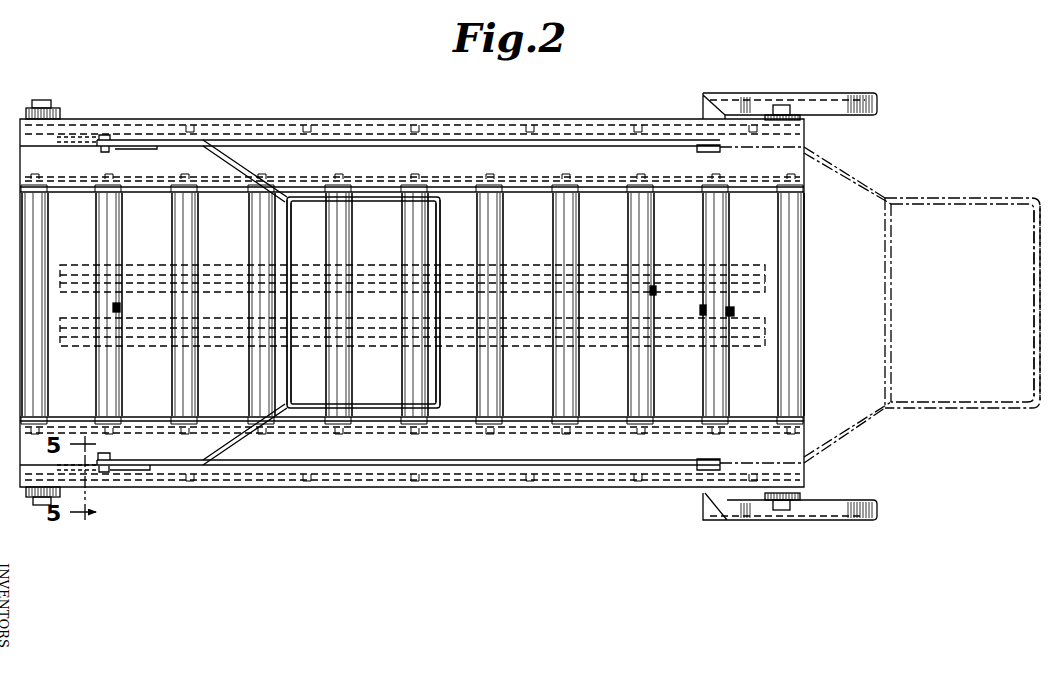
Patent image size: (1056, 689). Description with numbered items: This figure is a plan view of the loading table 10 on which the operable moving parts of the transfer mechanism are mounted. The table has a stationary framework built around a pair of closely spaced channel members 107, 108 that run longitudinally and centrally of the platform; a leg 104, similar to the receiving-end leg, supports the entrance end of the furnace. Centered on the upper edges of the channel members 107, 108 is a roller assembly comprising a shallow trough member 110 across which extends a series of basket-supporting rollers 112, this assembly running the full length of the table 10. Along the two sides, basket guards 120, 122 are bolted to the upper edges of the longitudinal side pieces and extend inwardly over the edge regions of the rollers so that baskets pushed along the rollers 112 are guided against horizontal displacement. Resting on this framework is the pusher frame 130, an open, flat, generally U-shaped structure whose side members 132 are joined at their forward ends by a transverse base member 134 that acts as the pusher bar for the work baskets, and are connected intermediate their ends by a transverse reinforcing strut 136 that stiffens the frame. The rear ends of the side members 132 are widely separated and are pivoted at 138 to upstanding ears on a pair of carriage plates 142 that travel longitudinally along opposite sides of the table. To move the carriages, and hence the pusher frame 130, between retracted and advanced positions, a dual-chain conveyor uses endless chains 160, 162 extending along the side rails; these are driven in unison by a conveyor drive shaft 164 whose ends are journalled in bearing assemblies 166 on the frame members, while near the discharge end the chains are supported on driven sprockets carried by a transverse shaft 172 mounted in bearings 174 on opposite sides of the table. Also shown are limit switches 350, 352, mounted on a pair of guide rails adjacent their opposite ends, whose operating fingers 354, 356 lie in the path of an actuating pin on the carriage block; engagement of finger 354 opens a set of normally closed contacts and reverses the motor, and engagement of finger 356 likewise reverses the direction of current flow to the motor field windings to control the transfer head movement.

The loading table 10 is at (324, 108).
The leg 104 is at (787, 92).
The channel member 107 is at (520, 268).
The channel member 108 is at (508, 346).
The shallow trough member 110 is at (453, 180).
The basket-supporting rollers 112 is at (172, 397).
The basket guard 120 is at (548, 157).
The basket guard 122 is at (585, 457).
The pusher frame 130 is at (238, 157).
The side members 132 is at (213, 142).
The transverse base member 134 is at (441, 230).
The transverse reinforcing strut 136 is at (298, 225).
The pivot 138 is at (105, 136).
The carriage plates 142 is at (140, 140).
The endless chain 160 is at (361, 126).
The endless chain 162 is at (491, 486).
The conveyor drive shaft 164 is at (41, 100).
The bearing assemblies 166 is at (60, 112).
The transverse shaft 172 is at (790, 106).
The bearings 174 is at (770, 114).
The limit switch 350 is at (92, 305).
The limit switch 352 is at (733, 314).
The operating finger 354 is at (118, 310).
The operating finger 356 is at (702, 313).